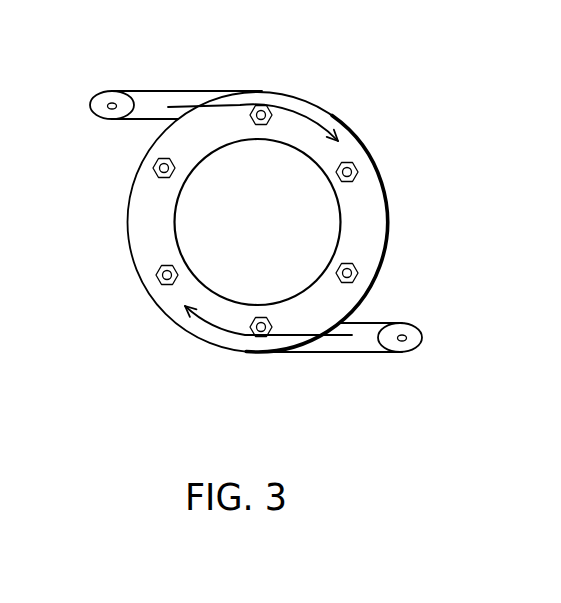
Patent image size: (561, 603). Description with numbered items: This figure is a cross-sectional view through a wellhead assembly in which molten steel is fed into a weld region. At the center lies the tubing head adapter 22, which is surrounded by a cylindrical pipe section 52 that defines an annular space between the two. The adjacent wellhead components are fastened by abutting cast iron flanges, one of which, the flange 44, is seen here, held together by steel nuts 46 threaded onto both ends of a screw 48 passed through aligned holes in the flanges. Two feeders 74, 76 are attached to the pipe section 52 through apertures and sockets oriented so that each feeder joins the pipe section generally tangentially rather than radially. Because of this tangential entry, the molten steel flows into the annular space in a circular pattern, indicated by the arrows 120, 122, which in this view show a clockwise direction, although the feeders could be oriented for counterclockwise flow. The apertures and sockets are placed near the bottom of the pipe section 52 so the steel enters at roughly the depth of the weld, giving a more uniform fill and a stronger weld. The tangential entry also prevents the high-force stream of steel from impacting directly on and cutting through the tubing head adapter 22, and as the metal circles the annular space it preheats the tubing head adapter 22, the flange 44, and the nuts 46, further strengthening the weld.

The tubing head adapter 22 is at (128, 246).
The flange 44 is at (360, 240).
The nut 46 is at (356, 164).
The screw 48 is at (358, 277).
The pipe section 52 is at (357, 138).
The feeder 74 is at (155, 100).
The feeder 76 is at (363, 342).
The arrow 120 is at (302, 112).
The arrow 122 is at (245, 337).